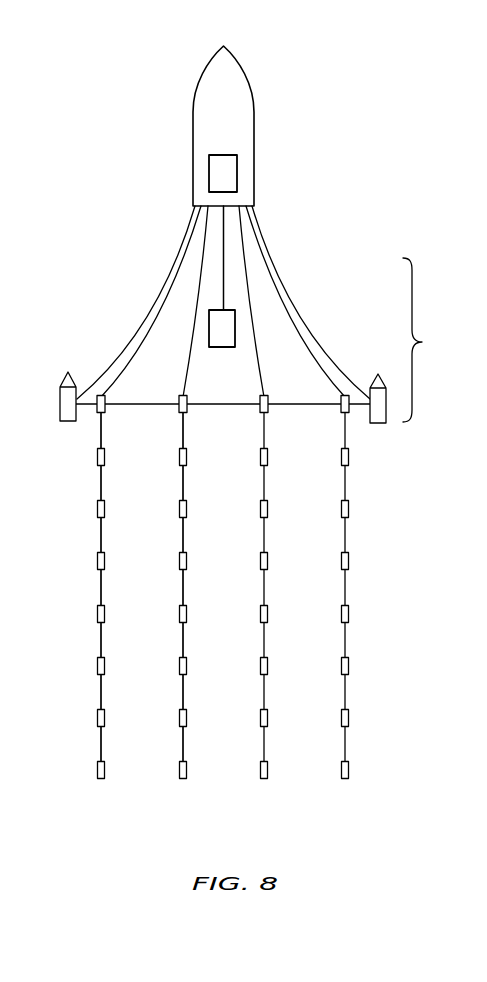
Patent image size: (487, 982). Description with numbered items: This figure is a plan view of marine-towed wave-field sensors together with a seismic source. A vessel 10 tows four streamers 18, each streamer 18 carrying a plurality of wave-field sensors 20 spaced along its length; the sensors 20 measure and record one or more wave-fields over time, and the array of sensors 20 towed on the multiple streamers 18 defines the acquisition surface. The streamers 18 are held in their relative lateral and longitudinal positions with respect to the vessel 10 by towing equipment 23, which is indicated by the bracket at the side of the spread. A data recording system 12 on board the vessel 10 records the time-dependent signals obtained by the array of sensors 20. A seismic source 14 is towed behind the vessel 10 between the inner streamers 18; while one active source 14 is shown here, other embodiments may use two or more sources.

The vessel 10 is at (255, 116).
The data recording system 12 is at (223, 174).
The seismic source 14 is at (215, 348).
The streamer 18 is at (100, 428).
The wave-field sensor 20 is at (97, 457).
The towing equipment 23 is at (422, 342).